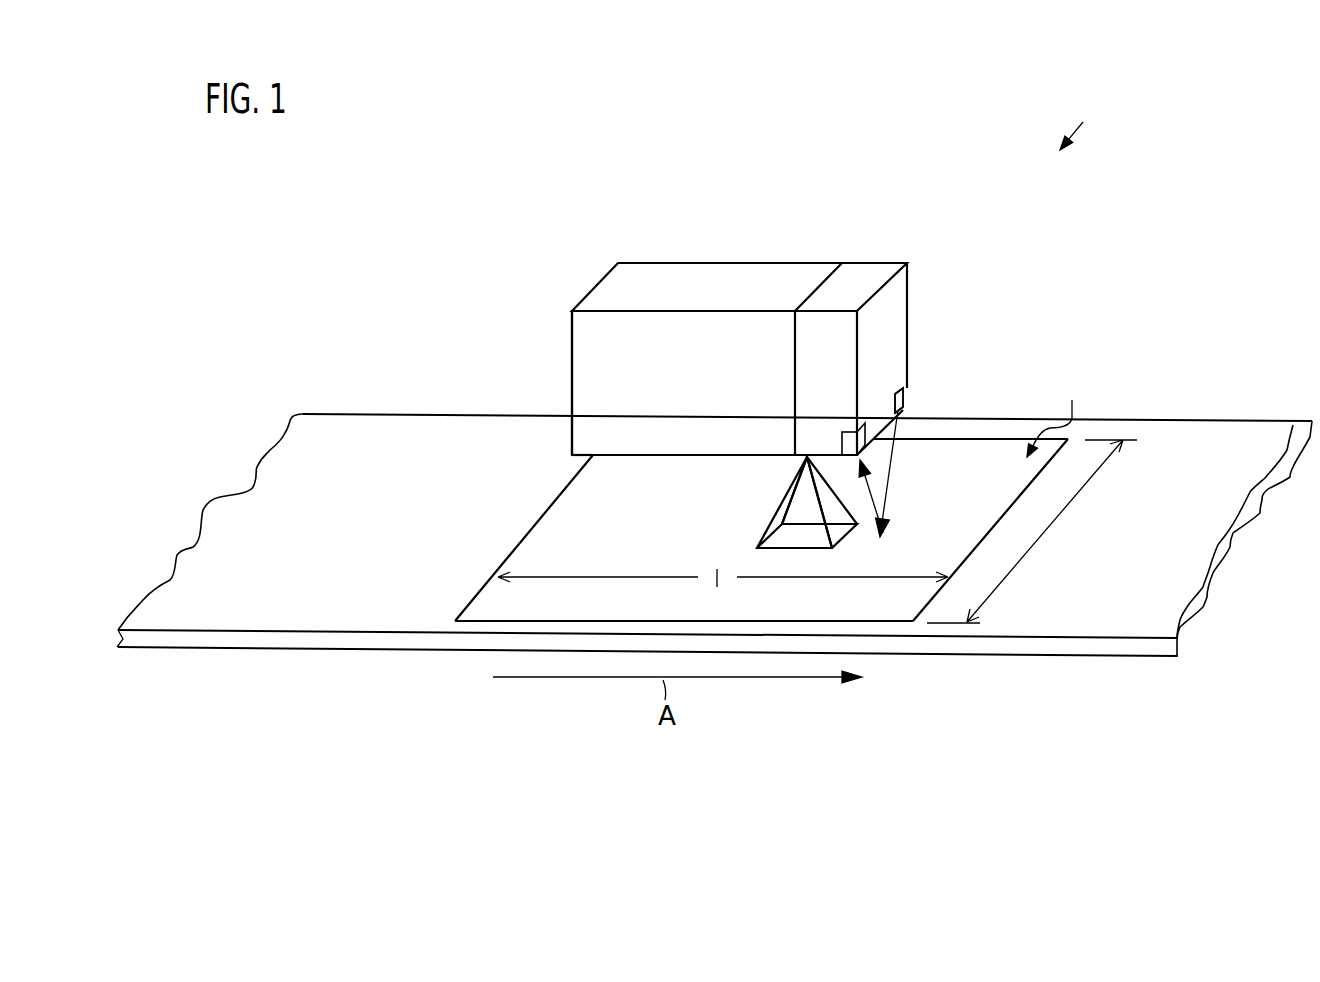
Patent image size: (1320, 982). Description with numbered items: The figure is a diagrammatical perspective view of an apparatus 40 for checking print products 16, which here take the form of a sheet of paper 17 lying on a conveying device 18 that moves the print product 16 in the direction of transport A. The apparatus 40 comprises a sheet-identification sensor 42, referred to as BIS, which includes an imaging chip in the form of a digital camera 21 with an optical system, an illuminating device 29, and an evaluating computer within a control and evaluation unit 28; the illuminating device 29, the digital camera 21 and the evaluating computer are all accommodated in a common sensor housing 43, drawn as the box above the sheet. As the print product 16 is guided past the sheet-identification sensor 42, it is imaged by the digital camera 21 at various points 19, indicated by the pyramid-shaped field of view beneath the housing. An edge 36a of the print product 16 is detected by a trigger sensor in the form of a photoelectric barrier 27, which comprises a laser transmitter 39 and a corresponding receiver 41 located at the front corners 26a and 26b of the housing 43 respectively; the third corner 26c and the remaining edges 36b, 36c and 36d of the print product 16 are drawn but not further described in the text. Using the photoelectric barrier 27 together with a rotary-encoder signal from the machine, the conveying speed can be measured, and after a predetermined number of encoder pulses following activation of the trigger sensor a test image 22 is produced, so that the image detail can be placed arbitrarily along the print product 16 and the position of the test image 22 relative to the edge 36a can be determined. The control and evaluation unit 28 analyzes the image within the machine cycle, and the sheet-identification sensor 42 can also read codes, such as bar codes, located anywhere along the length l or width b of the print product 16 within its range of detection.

The print product 16 is at (771, 496).
The sheet of paper 17 is at (1055, 413).
The conveying device 18 is at (1098, 650).
The points 19 is at (765, 541).
The digital camera 21 is at (800, 460).
The test image 22 is at (795, 525).
The front corner of the housing 26a is at (902, 410).
The front corner of the housing 26b is at (862, 460).
The third sensor 26c is at (593, 455).
The photoelectric barrier 27 is at (887, 505).
The control and evaluation unit 28 is at (898, 303).
The illuminating device 29 is at (580, 383).
The edge of the print product 36a is at (962, 557).
The front edge of printing region 36b is at (703, 620).
The left edge of printing region 36c is at (540, 514).
The rear edge of printing region 36d is at (1013, 440).
The laser transmitter 39 is at (902, 388).
The apparatus for checking print products 40 is at (1077, 119).
The receiver 41 is at (845, 456).
The sheet-identification sensor 42 is at (790, 258).
The sensor housing 43 is at (677, 262).